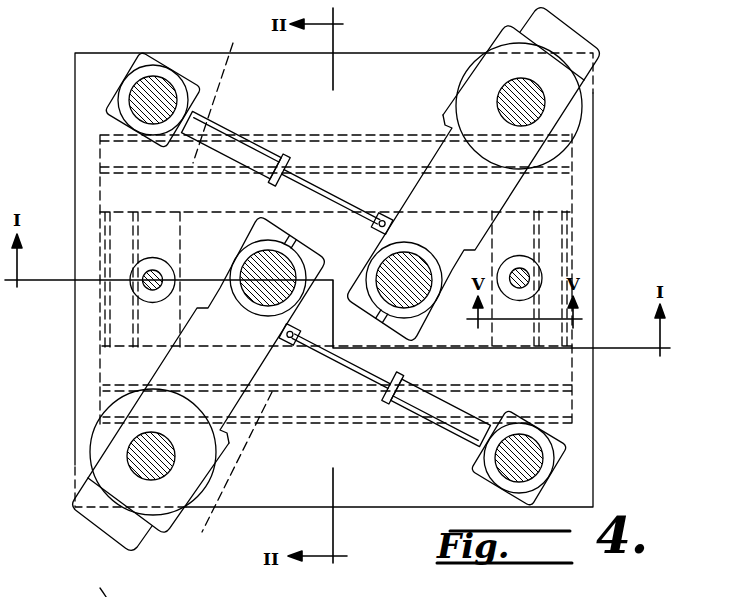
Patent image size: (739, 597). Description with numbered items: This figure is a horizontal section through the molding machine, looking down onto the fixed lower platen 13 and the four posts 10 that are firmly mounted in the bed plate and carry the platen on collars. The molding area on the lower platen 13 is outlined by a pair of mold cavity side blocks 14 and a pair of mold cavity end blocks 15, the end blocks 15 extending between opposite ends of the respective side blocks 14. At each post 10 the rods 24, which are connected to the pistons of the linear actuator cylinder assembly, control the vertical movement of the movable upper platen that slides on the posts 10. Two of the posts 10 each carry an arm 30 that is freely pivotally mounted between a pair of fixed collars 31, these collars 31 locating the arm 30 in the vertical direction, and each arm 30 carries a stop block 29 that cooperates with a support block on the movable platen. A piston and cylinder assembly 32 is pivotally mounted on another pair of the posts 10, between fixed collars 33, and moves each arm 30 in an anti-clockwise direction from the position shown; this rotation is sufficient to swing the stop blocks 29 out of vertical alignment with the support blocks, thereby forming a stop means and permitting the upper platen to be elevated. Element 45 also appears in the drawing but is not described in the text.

The posts 10 is at (137, 97).
The fixed lower platen 13 is at (386, 70).
The mold cavity side blocks 14 is at (231, 292).
The mold cavity end blocks 15 is at (152, 233).
The rods 24 is at (152, 290).
The stop blocks 29 is at (415, 268).
The arms 30 is at (160, 365).
The fixed collars 31 is at (85, 468).
The piston and cylinder assembly 32 is at (262, 150).
The fixed collars 33 is at (143, 51).
The element 45 is at (90, 585).